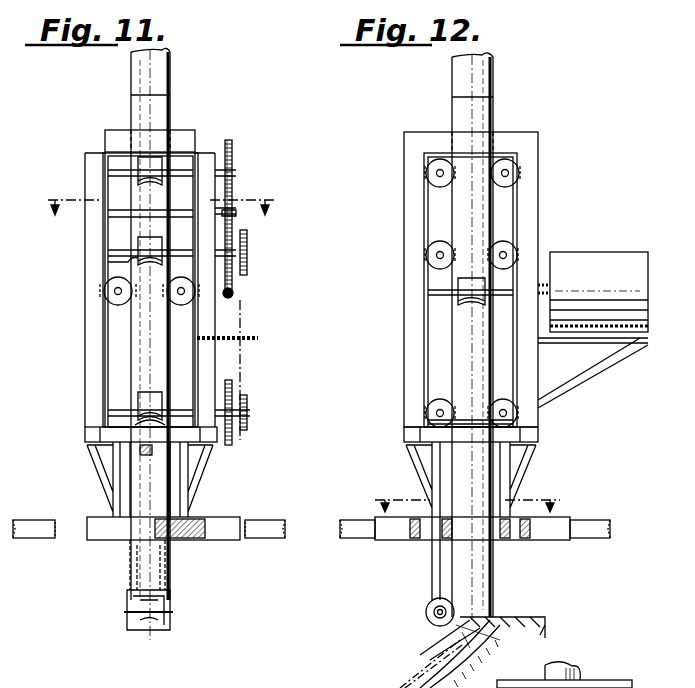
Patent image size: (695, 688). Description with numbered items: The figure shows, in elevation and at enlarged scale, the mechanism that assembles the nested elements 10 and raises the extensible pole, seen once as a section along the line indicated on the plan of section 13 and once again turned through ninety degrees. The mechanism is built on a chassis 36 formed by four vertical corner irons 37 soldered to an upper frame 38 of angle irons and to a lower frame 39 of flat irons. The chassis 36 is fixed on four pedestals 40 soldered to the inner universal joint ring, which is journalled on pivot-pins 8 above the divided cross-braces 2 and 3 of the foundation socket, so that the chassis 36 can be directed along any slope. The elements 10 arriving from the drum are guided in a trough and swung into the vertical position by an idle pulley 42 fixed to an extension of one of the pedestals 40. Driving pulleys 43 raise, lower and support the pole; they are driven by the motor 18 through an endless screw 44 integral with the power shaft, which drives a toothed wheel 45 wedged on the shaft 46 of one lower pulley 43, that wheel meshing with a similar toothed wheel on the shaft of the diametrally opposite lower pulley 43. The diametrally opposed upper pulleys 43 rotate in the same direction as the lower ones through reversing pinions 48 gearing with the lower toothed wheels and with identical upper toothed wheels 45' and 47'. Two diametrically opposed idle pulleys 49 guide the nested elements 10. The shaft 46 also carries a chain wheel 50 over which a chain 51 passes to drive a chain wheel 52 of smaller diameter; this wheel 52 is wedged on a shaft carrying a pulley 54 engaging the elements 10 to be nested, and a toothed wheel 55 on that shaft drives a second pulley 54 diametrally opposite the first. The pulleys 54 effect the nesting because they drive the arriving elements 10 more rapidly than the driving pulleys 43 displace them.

In FIG. 11, the cross-brace 2 is at (250, 520).
In FIG. 12, the cross-brace 2 is at (475, 528).
In FIG. 11, the cross-brace 3 is at (47, 540).
In FIG. 12, the pivot-pin 8 is at (467, 495).
In FIG. 11, the element 10 is at (170, 72).
In FIG. 12, the element 10 is at (458, 80).
In FIG. 11, the section line 13 is at (160, 196).
In FIG. 12, the motor 18 is at (598, 262).
In FIG. 11, the chassis 36 is at (80, 305).
In FIG. 12, the chassis 36 is at (400, 244).
In FIG. 11, the vertical corner iron 37 is at (92, 160).
In FIG. 12, the vertical corner iron 37 is at (538, 194).
In FIG. 11, the upper frame 38 is at (182, 136).
In FIG. 12, the upper frame 38 is at (512, 138).
In FIG. 11, the lower frame 39 is at (110, 432).
In FIG. 12, the lower frame 39 is at (432, 435).
In FIG. 11, the pedestal 40 is at (112, 502).
In FIG. 12, the pedestal 40 is at (432, 462).
In FIG. 11, the idle pulley 42 is at (150, 630).
In FIG. 12, the idle pulley 42 is at (426, 612).
In FIG. 11, the driving pulley 43 is at (135, 160).
In FIG. 12, the driving pulley 43 is at (435, 178).
In FIG. 11, the endless screw 44 is at (233, 296).
In FIG. 11, the toothed wheel 45 is at (261, 207).
In FIG. 12, the upper toothed wheel 45' is at (564, 675).
In FIG. 11, the shaft 46 is at (108, 262).
In FIG. 12, the upper toothed wheel 47' is at (621, 675).
In FIG. 11, the reversing pinion 48 is at (236, 214).
In FIG. 11, the idle pulley 49 is at (104, 291).
In FIG. 12, the idle pulley 49 is at (460, 302).
In FIG. 11, the chain wheel 50 is at (247, 240).
In FIG. 11, the chain 51 is at (245, 370).
In FIG. 11, the chain wheel 52 is at (247, 405).
In FIG. 11, the pulley 54 is at (138, 400).
In FIG. 12, the pulley 54 is at (432, 402).
In FIG. 11, the toothed wheel 55 is at (232, 444).